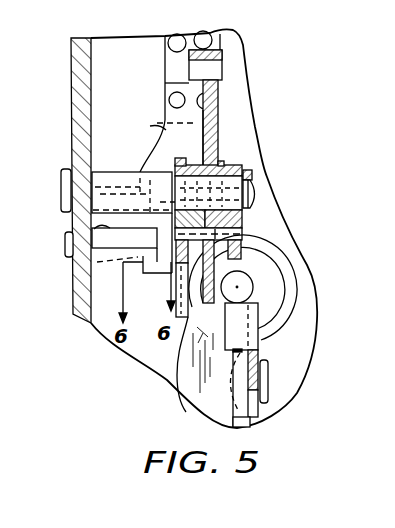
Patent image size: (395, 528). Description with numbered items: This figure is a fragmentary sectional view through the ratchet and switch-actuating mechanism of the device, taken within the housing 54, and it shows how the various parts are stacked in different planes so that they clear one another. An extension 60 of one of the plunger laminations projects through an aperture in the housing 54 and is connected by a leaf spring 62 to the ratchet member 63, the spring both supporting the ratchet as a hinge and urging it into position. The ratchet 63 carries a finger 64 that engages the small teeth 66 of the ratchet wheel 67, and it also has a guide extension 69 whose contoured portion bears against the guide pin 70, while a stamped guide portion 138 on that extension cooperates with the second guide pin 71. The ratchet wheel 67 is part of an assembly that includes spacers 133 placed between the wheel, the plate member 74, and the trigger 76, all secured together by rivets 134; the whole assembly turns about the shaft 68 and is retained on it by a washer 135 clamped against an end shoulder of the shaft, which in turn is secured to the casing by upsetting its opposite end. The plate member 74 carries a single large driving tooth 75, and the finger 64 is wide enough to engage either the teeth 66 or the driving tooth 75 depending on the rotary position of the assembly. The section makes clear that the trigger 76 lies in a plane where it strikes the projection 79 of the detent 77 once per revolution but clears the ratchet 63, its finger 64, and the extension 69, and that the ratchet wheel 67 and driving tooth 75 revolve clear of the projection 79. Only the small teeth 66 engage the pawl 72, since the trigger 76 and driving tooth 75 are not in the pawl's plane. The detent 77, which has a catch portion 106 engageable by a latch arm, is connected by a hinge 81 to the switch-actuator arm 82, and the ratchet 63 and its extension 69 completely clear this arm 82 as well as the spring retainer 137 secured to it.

The housing 54 is at (76, 90).
The extension 60 is at (222, 43).
The leaf spring 62 is at (172, 70).
The ratchet member 63 is at (143, 127).
The pawl 72 is at (220, 67).
The teeth 66 is at (208, 91).
The ratchet wheel 67 is at (208, 118).
The spacers 133 is at (215, 162).
The shaft 68 is at (250, 173).
The finger 64 is at (252, 183).
The washer 135 is at (245, 218).
The rivets 134 is at (247, 229).
The spring retainer 137 is at (275, 252).
The trigger 76 is at (238, 262).
The projection 79 is at (255, 316).
The detent 77 is at (258, 347).
The hinge 81 is at (268, 380).
The catch portion 106 is at (260, 414).
The switch-actuator arm 82 is at (168, 378).
The plate member 74 is at (172, 170).
The second guide pin 71 is at (62, 192).
The guide pin 70 is at (67, 234).
The guide portion 138 is at (73, 269).
The guide extension 69 is at (165, 268).
The driving tooth 75 is at (175, 294).